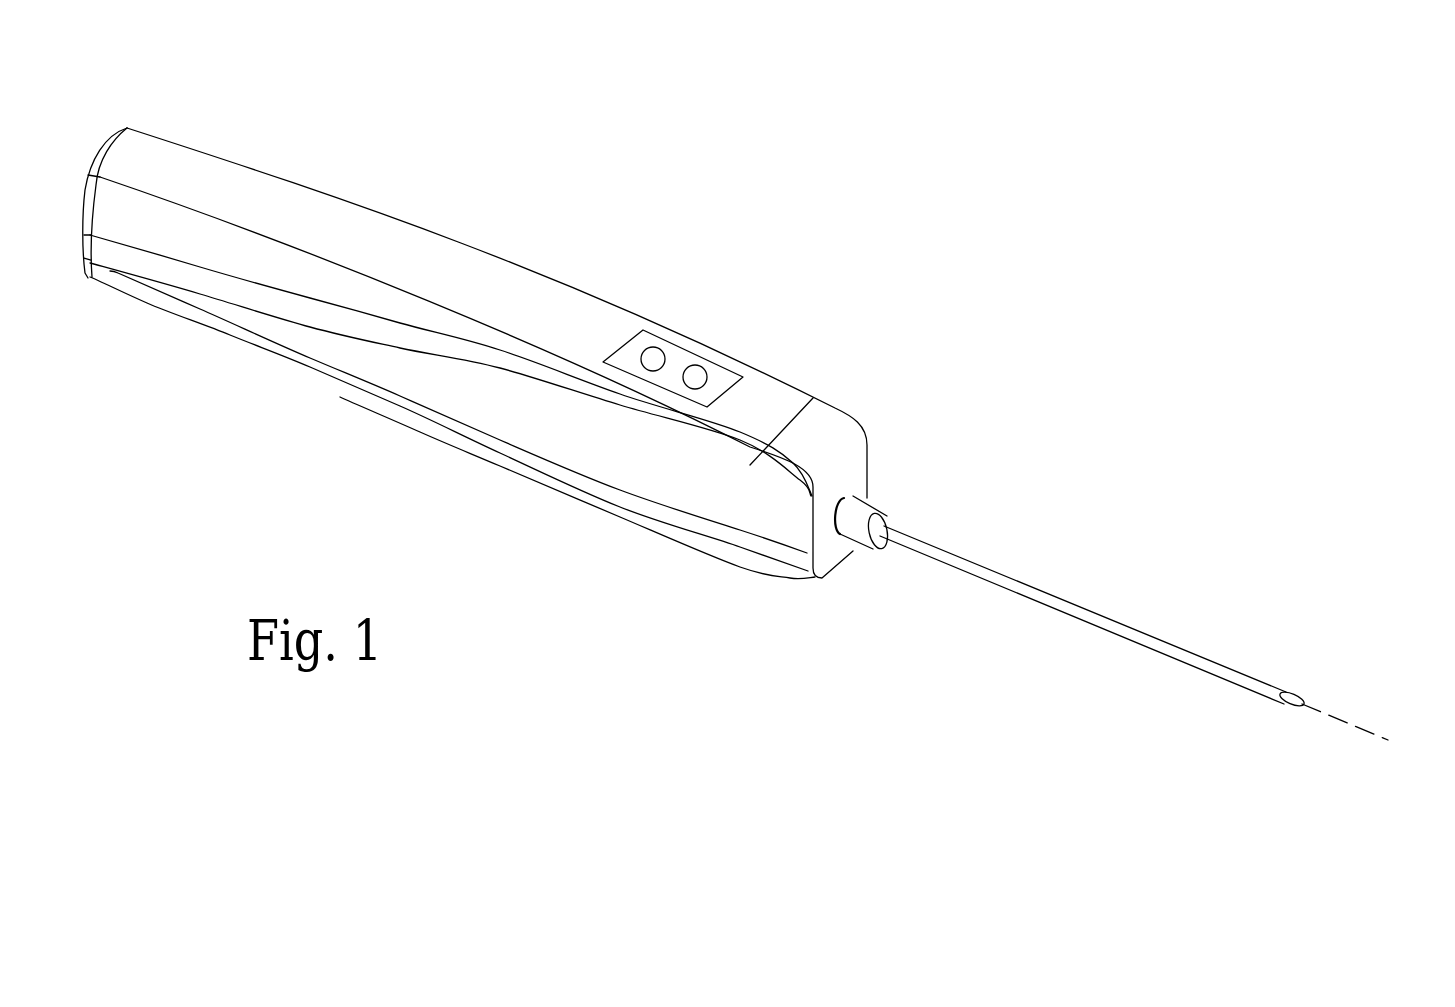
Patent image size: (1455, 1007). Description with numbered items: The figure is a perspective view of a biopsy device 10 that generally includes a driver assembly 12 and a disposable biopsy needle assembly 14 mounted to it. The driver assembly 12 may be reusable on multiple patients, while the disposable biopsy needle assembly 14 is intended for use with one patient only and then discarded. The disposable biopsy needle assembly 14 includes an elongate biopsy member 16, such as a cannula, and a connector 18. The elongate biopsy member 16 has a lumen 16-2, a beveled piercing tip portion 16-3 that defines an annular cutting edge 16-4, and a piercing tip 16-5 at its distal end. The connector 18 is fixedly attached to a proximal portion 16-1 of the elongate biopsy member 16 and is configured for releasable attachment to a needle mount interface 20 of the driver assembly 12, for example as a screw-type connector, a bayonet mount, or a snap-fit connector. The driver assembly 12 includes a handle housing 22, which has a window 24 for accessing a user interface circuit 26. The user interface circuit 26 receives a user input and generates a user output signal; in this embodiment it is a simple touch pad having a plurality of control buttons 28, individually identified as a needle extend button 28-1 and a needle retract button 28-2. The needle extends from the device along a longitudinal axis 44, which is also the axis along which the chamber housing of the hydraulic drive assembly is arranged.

The biopsy device 10 is at (1079, 251).
The driver assembly 12 is at (480, 187).
The disposable biopsy needle assembly 14 is at (1110, 551).
The elongate biopsy member 16 is at (1143, 633).
The proximal portion 16-1 is at (943, 533).
The lumen 16-2 is at (1312, 703).
The beveled piercing tip portion 16-3 is at (1287, 710).
The annular cutting edge 16-4 is at (1293, 695).
The piercing tip 16-5 is at (1298, 708).
The connector 18 is at (860, 527).
The needle mount interface 20 is at (833, 522).
The handle housing 22 is at (348, 203).
The window 24 is at (625, 346).
The user interface circuit 26 is at (645, 345).
The control buttons 28 is at (688, 260).
The needle extend button 28-1 is at (710, 360).
The needle retract button 28-2 is at (665, 350).
The longitudinal axis 44 is at (1363, 732).